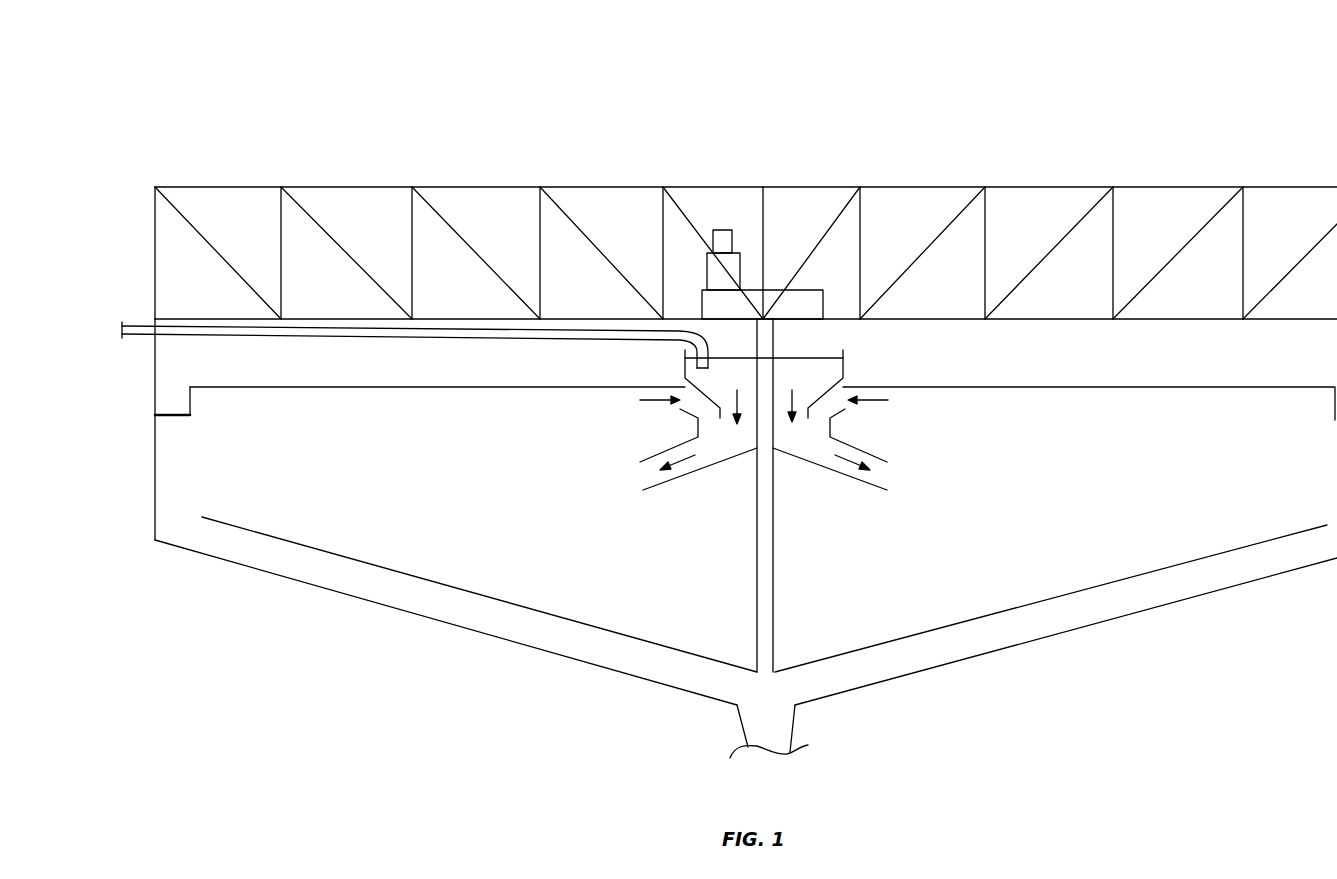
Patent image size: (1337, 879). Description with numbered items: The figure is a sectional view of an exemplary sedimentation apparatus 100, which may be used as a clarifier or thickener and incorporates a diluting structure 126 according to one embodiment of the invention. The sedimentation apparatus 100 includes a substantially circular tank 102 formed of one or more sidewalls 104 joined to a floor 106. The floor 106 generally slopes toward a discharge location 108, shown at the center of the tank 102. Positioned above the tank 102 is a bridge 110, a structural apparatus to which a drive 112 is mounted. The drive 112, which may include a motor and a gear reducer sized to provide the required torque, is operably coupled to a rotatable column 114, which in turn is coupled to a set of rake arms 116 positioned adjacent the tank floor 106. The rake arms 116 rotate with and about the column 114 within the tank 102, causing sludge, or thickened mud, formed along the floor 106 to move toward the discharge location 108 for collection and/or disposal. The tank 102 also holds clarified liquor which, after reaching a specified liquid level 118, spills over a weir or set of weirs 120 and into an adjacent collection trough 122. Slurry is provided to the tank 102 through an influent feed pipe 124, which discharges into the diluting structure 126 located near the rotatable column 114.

The sedimentation apparatus 100 is at (1092, 104).
The tank 102 is at (177, 545).
The sidewall 104 is at (155, 506).
The floor 106 is at (986, 650).
The discharge location 108 is at (797, 723).
The bridge 110 is at (1052, 186).
The drive 112 is at (773, 289).
The rotatable column 114 is at (774, 340).
The rake arms 116 is at (568, 618).
The liquid level 118 is at (212, 386).
The weir 120 is at (190, 388).
The collection trough 122 is at (162, 422).
The influent feed pipe 124 is at (650, 334).
The diluting structure 126 is at (672, 370).